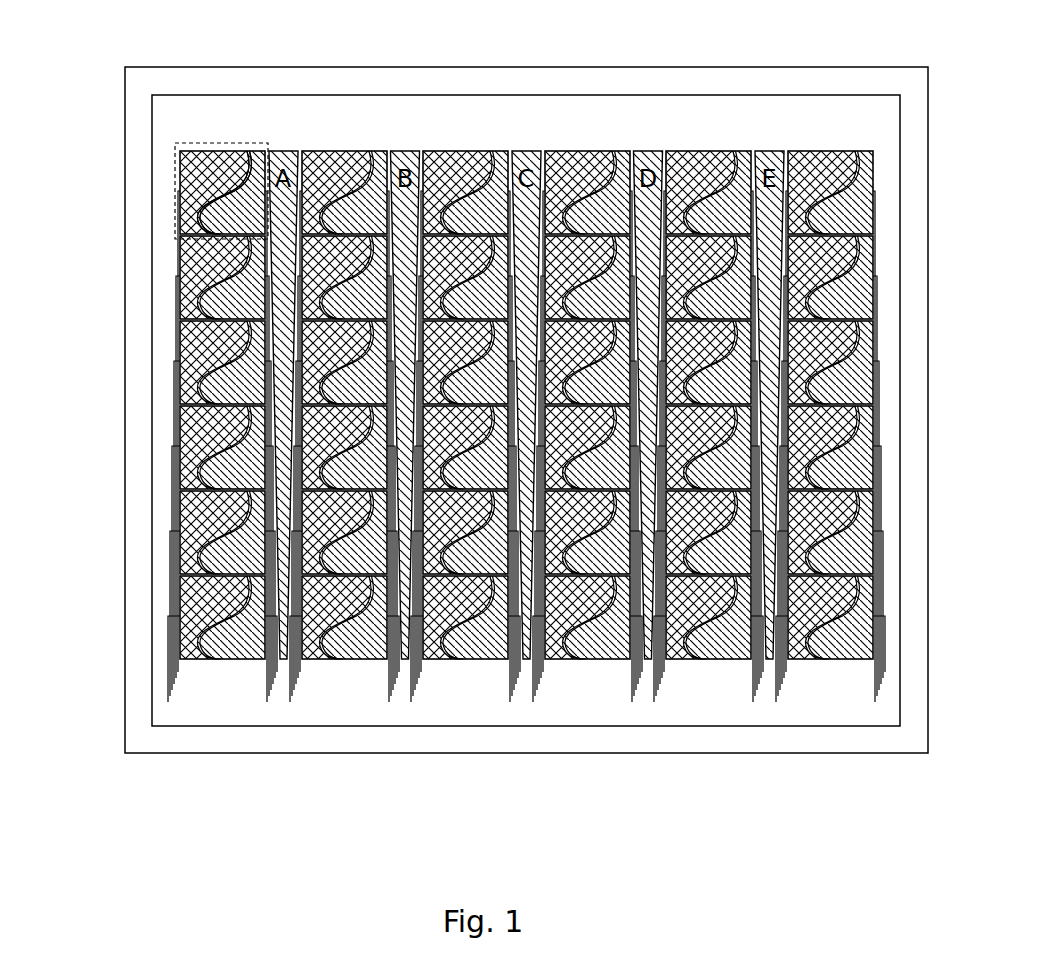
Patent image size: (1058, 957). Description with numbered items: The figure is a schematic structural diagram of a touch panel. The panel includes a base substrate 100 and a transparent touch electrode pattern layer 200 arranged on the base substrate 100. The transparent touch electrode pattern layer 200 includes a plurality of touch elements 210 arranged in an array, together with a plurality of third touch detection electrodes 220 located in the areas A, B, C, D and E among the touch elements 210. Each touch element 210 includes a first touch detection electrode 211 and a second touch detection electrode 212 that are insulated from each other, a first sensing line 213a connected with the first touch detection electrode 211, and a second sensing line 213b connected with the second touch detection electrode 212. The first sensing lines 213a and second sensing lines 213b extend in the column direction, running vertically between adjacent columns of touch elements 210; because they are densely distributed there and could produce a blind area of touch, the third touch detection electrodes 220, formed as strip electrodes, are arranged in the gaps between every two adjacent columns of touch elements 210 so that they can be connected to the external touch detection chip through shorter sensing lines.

The base substrate 100 is at (845, 67).
The transparent touch electrode pattern layer 200 is at (525, 95).
The touch element 210 is at (173, 145).
The first touch detection electrode 211 is at (180, 185).
The second touch detection electrode 212 is at (248, 152).
The first sensing line 213a is at (177, 267).
The second sensing line 213b is at (270, 682).
The third touch detection electrode 220 is at (282, 152).